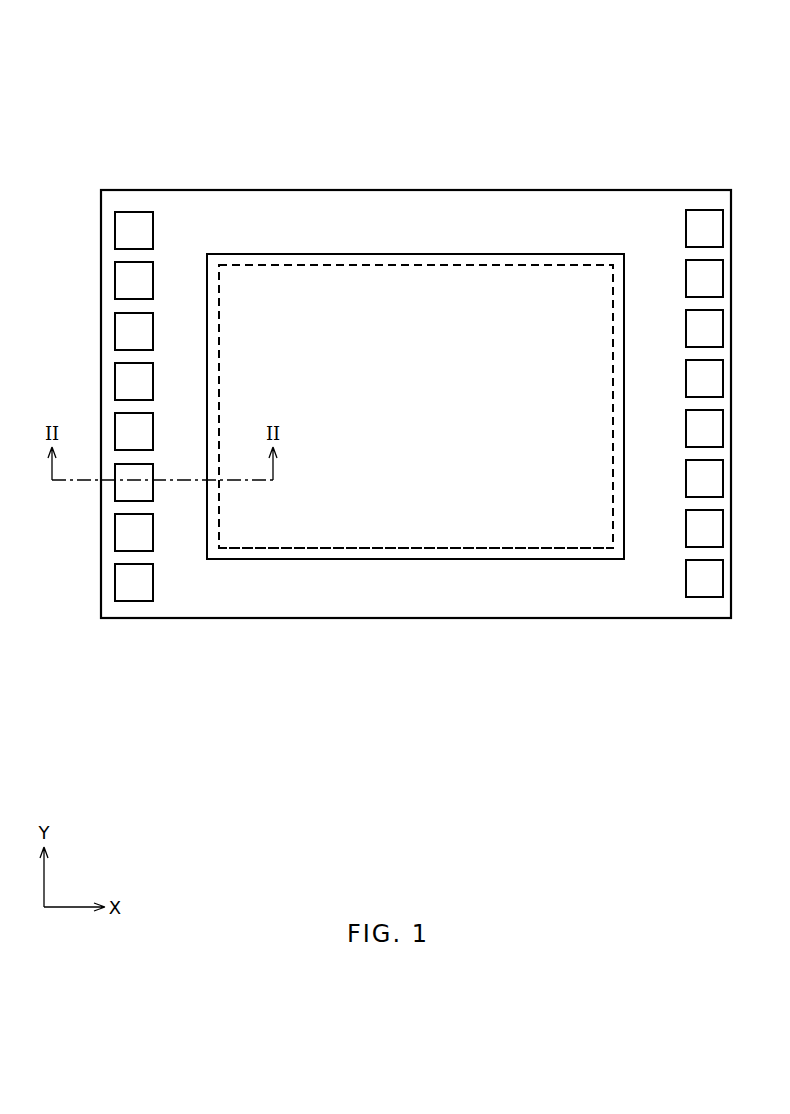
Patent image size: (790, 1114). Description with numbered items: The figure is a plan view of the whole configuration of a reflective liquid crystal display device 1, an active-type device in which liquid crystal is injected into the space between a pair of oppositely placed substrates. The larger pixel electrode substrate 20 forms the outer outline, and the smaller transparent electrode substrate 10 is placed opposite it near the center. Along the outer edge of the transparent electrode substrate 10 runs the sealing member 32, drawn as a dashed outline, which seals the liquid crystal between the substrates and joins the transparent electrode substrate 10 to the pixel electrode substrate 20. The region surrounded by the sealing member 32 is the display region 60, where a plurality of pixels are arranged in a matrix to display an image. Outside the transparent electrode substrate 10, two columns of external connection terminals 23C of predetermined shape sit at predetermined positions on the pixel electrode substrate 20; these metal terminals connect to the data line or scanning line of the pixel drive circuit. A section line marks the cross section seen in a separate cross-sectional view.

The reflective liquid crystal display device 1 is at (416, 366).
The transparent electrode substrate 10 is at (276, 535).
The pixel electrode substrate 20 is at (290, 204).
The external connection terminals 23C is at (137, 591).
The sealing member 32 is at (510, 549).
The display region 60 is at (535, 298).